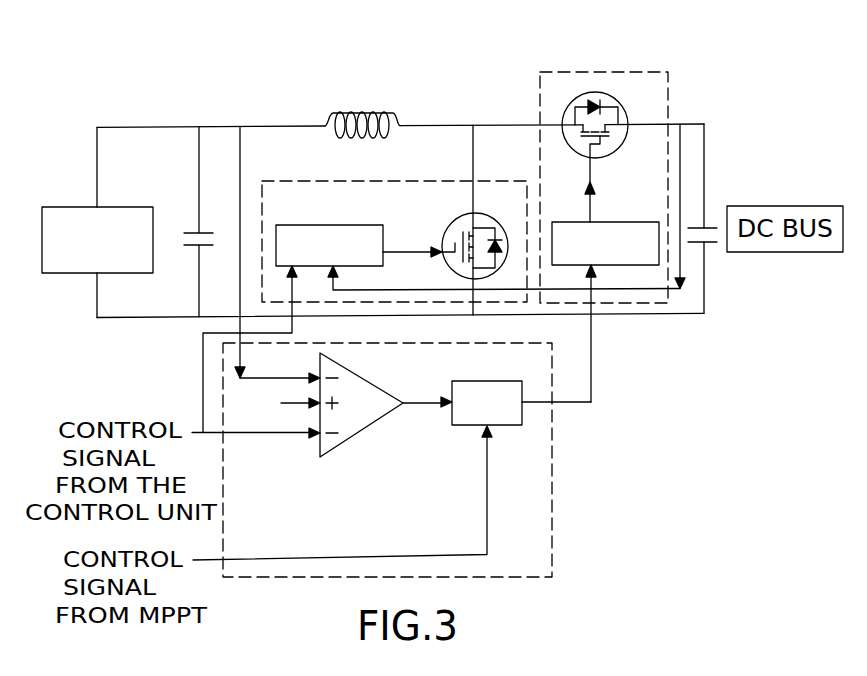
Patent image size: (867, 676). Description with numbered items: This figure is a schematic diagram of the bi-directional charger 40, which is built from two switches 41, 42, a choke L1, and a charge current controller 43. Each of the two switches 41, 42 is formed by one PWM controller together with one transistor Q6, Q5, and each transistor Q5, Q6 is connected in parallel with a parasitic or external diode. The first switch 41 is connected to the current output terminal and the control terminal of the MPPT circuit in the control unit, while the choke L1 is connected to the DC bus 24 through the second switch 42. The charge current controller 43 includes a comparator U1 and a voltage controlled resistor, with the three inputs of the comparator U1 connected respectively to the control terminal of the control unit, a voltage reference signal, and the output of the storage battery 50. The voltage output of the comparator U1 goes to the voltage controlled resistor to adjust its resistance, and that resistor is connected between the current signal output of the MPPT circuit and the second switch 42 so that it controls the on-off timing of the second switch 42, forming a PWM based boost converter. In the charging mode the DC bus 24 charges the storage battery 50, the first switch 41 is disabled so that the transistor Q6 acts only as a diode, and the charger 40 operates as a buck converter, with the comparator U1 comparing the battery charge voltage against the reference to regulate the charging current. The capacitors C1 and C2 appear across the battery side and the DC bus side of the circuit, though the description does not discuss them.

The storage battery 50 is at (76, 214).
The bi-directional charger 40 is at (696, 87).
The first switch 41 is at (365, 278).
The second switch 42 is at (604, 208).
The charge current controller 43 is at (424, 460).
The DC bus 24 is at (704, 145).
The choke L1 is at (362, 137).
The input capacitor C1 is at (207, 222).
The output capacitor C2 is at (713, 255).
The transistor Q5 is at (609, 157).
The transistor Q6 is at (433, 144).
The comparator U1 is at (361, 405).